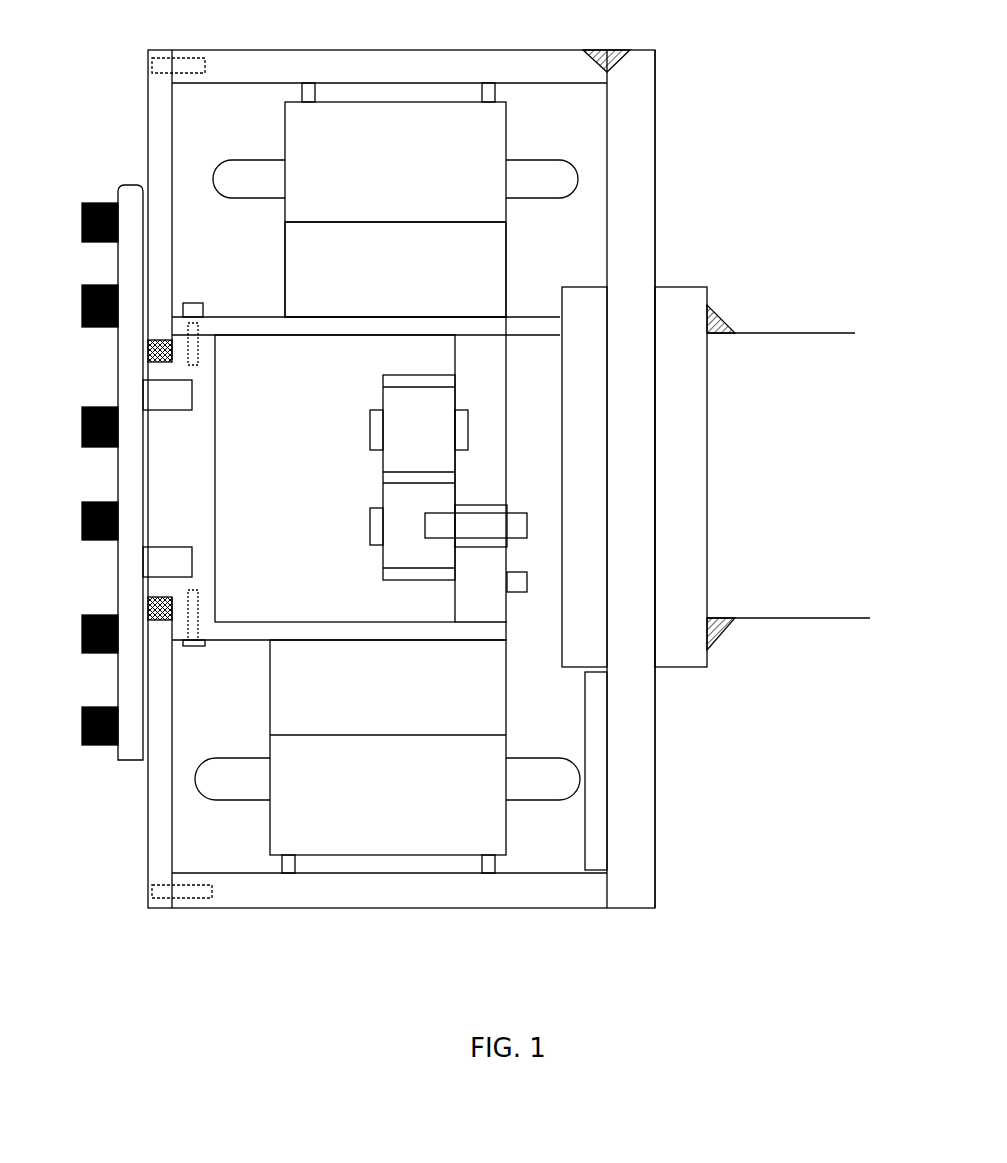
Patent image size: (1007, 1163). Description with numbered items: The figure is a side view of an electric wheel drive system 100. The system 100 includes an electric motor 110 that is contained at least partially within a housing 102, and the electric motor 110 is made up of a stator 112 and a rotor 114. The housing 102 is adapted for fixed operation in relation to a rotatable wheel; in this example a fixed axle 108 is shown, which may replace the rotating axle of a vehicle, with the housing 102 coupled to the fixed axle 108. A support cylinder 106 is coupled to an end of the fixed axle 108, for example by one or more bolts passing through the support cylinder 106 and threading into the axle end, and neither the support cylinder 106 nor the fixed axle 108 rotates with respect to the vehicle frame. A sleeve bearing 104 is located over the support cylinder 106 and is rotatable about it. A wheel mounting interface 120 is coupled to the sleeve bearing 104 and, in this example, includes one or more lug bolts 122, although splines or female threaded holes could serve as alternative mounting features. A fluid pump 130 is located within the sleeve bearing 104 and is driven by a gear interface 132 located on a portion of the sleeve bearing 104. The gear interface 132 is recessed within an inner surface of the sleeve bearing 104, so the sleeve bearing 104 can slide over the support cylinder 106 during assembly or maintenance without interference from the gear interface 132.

The electric wheel drive system 100 is at (635, 1033).
The housing 102 is at (640, 127).
The sleeve bearing 104 is at (245, 318).
The support cylinder 106 is at (270, 478).
The fixed axle 108 is at (743, 370).
The electric motor 110 is at (312, 192).
The stator 112 is at (478, 178).
The rotor 114 is at (476, 275).
The wheel mounting interface 120 is at (132, 735).
The lug bolts 122 is at (93, 617).
The fluid pump 130 is at (427, 552).
The gear interface 132 is at (490, 625).